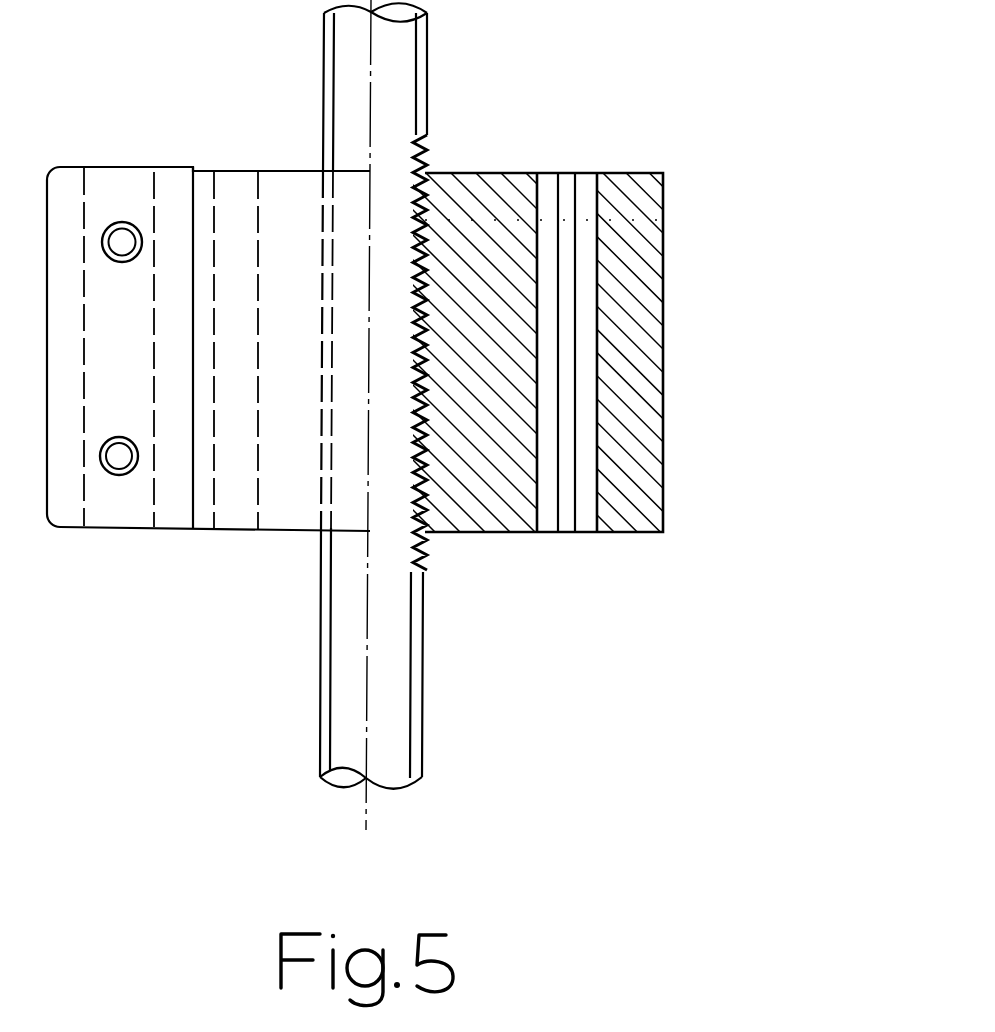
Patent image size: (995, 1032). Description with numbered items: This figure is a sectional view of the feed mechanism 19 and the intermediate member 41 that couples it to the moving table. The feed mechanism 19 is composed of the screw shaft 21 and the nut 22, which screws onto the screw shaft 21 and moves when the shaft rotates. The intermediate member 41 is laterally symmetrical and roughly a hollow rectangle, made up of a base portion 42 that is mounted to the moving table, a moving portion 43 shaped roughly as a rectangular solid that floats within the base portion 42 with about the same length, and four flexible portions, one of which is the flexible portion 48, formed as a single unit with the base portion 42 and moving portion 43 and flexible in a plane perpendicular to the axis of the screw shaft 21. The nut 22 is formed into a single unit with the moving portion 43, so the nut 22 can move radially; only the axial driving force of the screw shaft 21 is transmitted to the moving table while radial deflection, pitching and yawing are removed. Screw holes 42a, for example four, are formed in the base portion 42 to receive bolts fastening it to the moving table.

The feed mechanism 19 is at (563, 689).
The screw shaft 21 is at (393, 738).
The nut 22 is at (445, 520).
The intermediate member 41 is at (672, 271).
The base portion 42 is at (651, 394).
The screw holes 42a is at (118, 230).
The moving portion 43 is at (508, 197).
The flexible portion 48 is at (577, 458).